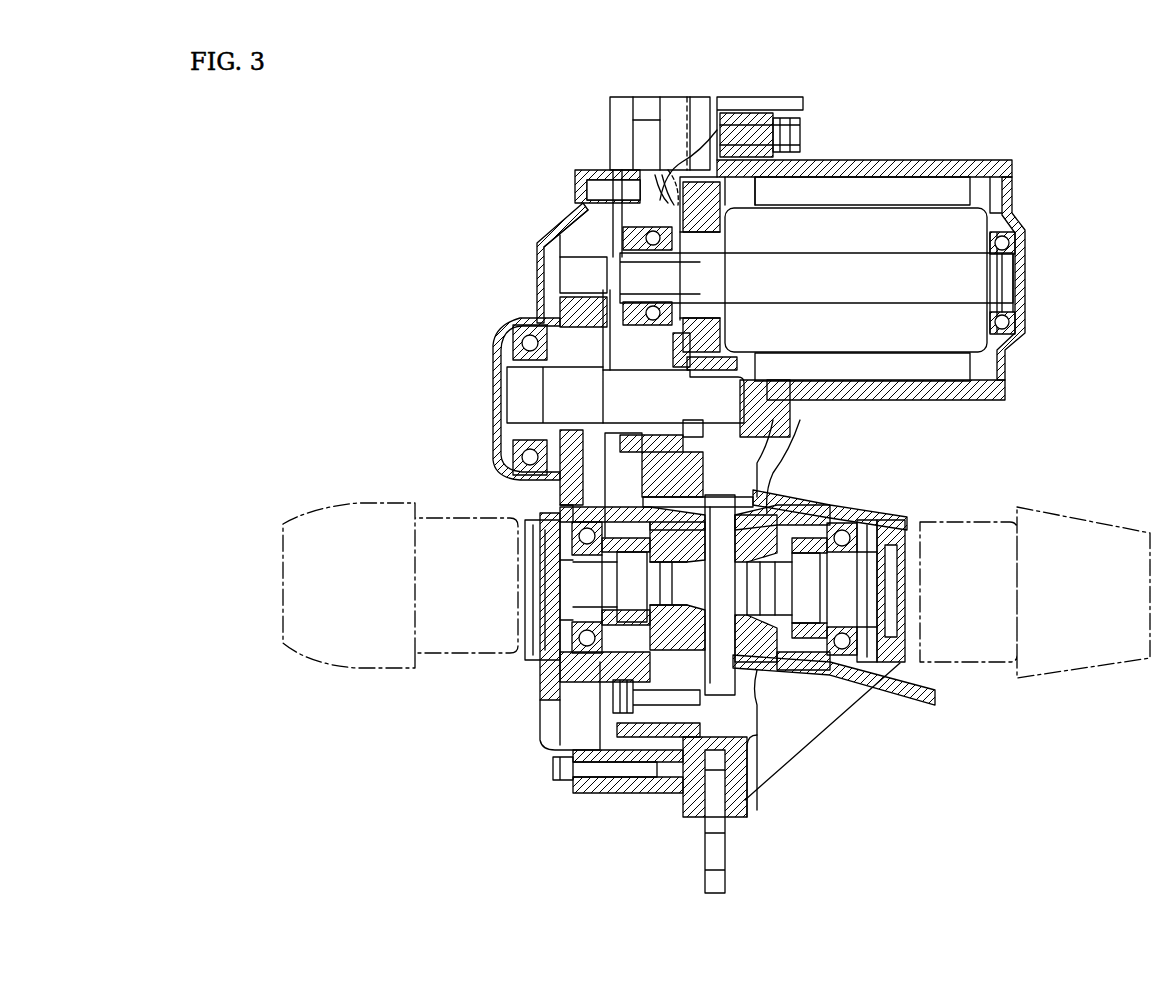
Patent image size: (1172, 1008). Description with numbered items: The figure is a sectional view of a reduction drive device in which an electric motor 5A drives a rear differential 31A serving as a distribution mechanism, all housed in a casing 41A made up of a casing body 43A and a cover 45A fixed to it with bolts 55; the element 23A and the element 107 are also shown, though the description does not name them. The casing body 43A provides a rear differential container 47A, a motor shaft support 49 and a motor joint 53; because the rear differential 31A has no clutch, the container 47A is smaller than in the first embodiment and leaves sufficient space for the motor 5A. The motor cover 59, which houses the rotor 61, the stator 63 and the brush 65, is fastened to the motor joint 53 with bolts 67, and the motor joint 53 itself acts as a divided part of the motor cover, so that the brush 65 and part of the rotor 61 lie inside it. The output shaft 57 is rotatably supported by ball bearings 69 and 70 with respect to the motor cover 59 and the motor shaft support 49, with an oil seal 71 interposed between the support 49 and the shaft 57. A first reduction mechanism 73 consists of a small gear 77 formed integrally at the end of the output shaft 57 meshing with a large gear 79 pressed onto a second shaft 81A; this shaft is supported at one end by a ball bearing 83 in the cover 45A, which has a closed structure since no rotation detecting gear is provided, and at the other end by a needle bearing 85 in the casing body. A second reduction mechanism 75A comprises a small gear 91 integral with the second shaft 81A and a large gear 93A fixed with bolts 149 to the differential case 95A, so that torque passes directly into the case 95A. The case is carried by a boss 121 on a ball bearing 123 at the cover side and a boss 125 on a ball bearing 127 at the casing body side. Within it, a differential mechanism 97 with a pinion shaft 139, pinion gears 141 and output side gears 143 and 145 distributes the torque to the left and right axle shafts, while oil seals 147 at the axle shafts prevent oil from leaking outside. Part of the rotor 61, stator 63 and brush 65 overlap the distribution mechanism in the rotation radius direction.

The electric motor 5A is at (1030, 245).
The motor housing 23A is at (998, 155).
The rear differential 31A is at (803, 647).
The casing 41A is at (582, 170).
The casing body 43A is at (652, 195).
The cover 45A is at (560, 203).
The rear differential container 47A is at (797, 687).
The motor shaft support 49 is at (660, 203).
The motor joint 53 is at (612, 165).
The bolts 55 is at (560, 768).
The output shaft 57 is at (1005, 272).
The motor cover 59 is at (920, 165).
The rotor 61 is at (935, 230).
The stator 63 is at (1010, 175).
The brush 65 is at (710, 225).
The bolts 67 is at (798, 125).
The ball bearing 69 is at (1015, 215).
The ball bearing 70 is at (636, 160).
The oil seal 71 is at (597, 172).
The first reduction mechanism 73 is at (600, 262).
The second reduction mechanism 75A is at (1000, 396).
The small gear 77 is at (568, 240).
The large gear 79 is at (580, 293).
The second shaft 81A is at (532, 397).
The ball bearing 83 is at (532, 305).
The needle bearing 85 is at (655, 372).
The small gear 91 is at (975, 365).
The large gear 93A is at (663, 423).
The differential case 95A is at (828, 518).
The differential mechanism 97 is at (770, 695).
The left axle shaft 107 is at (540, 655).
The boss 121 is at (560, 650).
The ball bearing 123 is at (578, 660).
The boss 125 is at (875, 548).
The ball bearing 127 is at (880, 530).
The pinion shaft 139 is at (727, 660).
The pinion gears 141 is at (748, 507).
The output side gear 143 is at (670, 793).
The output side gear 145 is at (790, 705).
The oil seals 147 is at (905, 662).
The bolts 149 is at (620, 713).